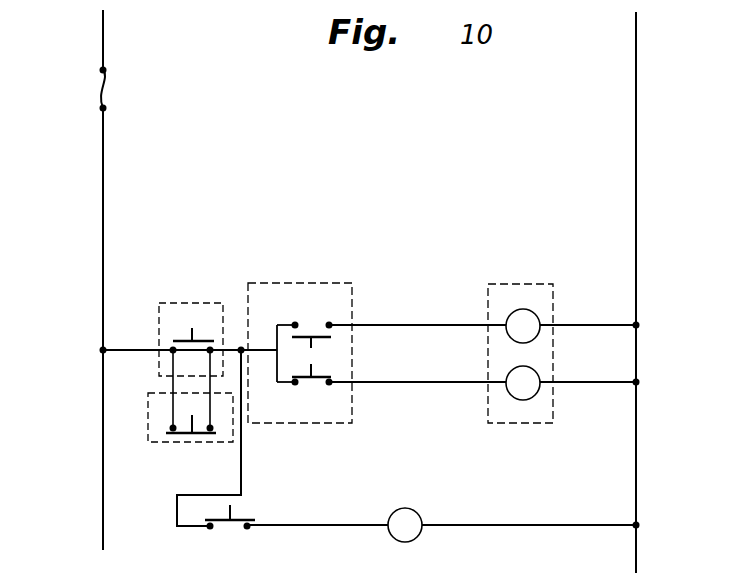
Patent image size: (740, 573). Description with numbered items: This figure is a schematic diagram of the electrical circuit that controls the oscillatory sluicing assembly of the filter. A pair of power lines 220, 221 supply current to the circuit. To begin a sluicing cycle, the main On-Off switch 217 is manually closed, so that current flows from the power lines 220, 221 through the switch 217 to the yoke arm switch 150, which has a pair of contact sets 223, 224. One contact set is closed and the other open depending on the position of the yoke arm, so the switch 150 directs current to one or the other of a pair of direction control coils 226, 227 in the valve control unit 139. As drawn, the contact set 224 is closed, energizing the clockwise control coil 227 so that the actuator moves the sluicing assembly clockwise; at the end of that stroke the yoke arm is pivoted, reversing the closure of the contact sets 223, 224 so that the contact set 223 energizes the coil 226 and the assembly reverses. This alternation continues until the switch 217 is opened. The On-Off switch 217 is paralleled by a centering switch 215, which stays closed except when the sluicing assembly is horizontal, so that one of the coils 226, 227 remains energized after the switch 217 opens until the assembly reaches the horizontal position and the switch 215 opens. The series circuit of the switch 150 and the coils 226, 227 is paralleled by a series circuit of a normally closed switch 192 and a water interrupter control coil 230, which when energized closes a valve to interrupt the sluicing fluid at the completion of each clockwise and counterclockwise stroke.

The power line 220 is at (105, 146).
The power line 221 is at (637, 124).
The On-Off switch 217 is at (173, 343).
The centering switch 215 is at (159, 443).
The yoke arm switch 150 is at (318, 293).
The contact set 223 is at (315, 322).
The contact set 224 is at (315, 386).
The valve control unit 139 is at (522, 284).
The direction control coil 226 is at (540, 316).
The clockwise control coil 227 is at (537, 395).
The normally closed switch 192 is at (237, 517).
The water interrupter control coil 230 is at (416, 513).